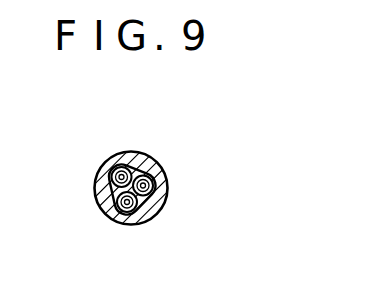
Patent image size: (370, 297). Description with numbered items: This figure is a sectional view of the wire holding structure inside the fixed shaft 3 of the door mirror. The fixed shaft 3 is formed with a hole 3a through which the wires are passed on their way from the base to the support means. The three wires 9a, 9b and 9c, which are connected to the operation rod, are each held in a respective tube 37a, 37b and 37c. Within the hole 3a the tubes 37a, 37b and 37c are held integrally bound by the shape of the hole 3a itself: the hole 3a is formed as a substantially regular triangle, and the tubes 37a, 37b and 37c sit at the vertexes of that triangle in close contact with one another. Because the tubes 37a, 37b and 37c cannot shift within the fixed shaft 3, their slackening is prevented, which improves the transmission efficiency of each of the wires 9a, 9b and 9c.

The fixed shaft 3 is at (146, 156).
The hole 3a is at (165, 203).
The wire 9a is at (133, 213).
The wire 9b is at (155, 185).
The wire 9c is at (121, 166).
The tube 37a is at (120, 217).
The tube 37b is at (168, 170).
The tube 37c is at (118, 163).